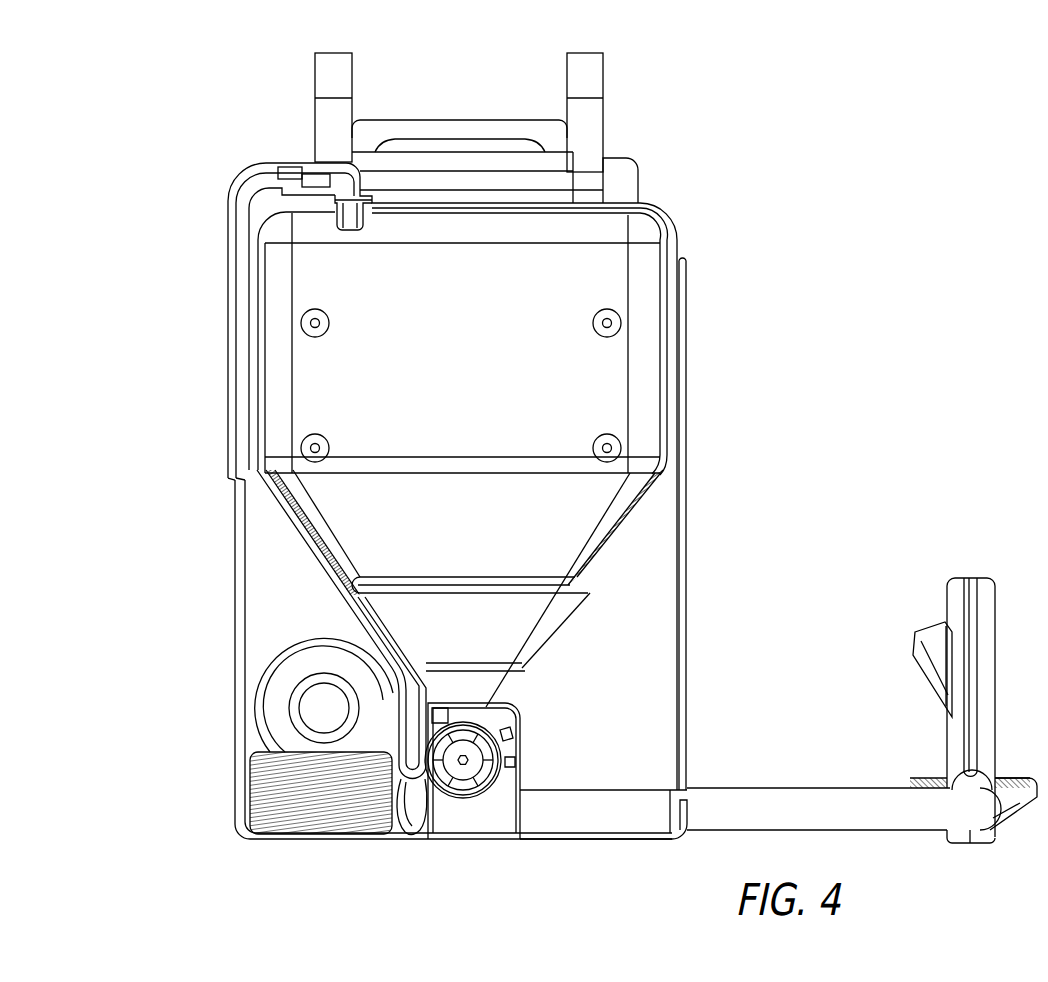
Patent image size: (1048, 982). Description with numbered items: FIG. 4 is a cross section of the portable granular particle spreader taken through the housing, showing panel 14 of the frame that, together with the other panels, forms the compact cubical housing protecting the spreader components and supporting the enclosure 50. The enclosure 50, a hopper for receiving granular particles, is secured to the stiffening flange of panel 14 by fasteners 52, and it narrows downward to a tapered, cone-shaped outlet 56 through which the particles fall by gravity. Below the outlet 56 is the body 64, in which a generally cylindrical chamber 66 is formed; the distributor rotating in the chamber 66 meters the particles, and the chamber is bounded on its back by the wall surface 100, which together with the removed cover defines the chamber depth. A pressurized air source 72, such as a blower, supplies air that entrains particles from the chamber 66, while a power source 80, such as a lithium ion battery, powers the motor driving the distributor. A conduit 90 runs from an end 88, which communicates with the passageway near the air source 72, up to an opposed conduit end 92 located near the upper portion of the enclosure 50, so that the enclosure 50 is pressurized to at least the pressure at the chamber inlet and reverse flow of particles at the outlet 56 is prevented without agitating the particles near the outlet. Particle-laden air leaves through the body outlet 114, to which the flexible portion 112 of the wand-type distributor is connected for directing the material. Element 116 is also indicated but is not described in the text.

The panel 14 is at (636, 665).
The enclosure 50 is at (541, 391).
The fasteners 52 is at (610, 321).
The outlet 56 is at (537, 693).
The body 64 is at (442, 823).
The chamber 66 is at (467, 808).
The pressurized air source 72 is at (257, 680).
The power source 80 is at (257, 753).
The end of conduit 88 is at (405, 838).
The conduit 90 is at (287, 557).
The conduit end 92 is at (367, 183).
The wall surface 100 is at (476, 710).
The flexible portion 112 is at (777, 777).
The body outlet 114 is at (533, 773).
The base 116 is at (528, 848).